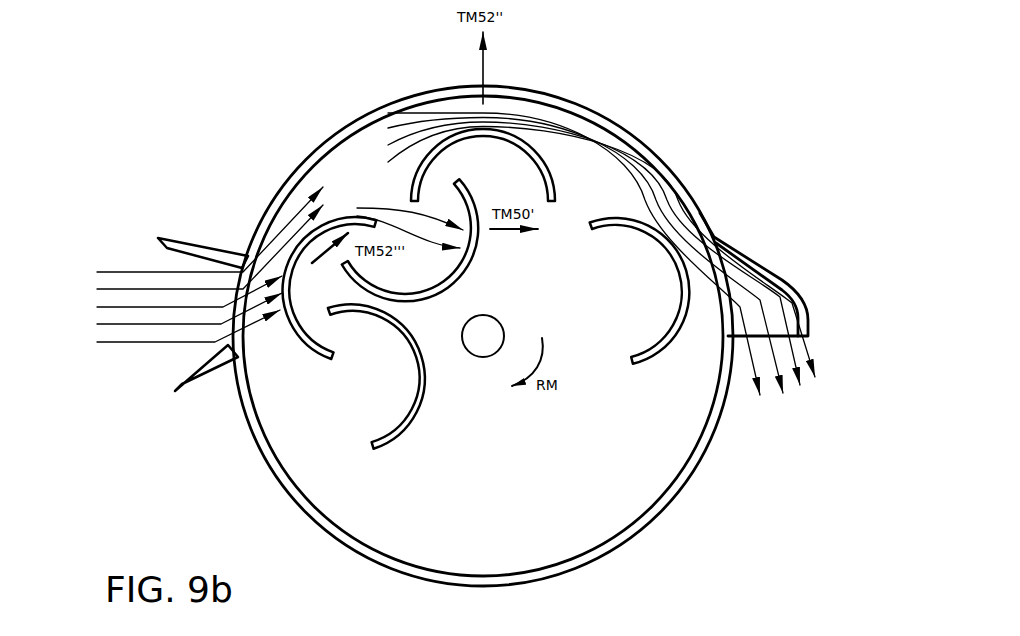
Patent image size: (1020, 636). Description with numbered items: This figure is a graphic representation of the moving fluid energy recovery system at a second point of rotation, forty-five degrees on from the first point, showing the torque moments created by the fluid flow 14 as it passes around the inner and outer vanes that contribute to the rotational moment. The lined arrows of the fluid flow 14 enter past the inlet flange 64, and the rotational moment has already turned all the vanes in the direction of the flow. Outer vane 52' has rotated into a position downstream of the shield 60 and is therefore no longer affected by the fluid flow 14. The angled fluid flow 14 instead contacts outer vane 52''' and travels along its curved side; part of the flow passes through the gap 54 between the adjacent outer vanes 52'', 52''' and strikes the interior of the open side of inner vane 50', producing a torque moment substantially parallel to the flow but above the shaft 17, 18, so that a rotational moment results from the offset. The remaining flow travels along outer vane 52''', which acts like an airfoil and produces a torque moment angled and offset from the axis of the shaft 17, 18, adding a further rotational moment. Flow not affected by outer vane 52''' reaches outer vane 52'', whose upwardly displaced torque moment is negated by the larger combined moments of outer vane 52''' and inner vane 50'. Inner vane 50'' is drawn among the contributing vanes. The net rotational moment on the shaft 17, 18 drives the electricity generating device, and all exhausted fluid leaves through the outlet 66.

The fluid flow 14 is at (127, 272).
The shield 60 is at (652, 141).
The inlet flange 64 is at (206, 246).
The outlet 66 is at (767, 265).
The gap 54 is at (530, 208).
The outer vane 52' is at (695, 338).
The outer vane 52'' is at (530, 208).
The outer vane 52''' is at (268, 330).
The inner vane 50' is at (457, 251).
The inner vane 50'' is at (361, 376).
The shaft 17 is at (536, 383).
The shaft 18 is at (485, 358).